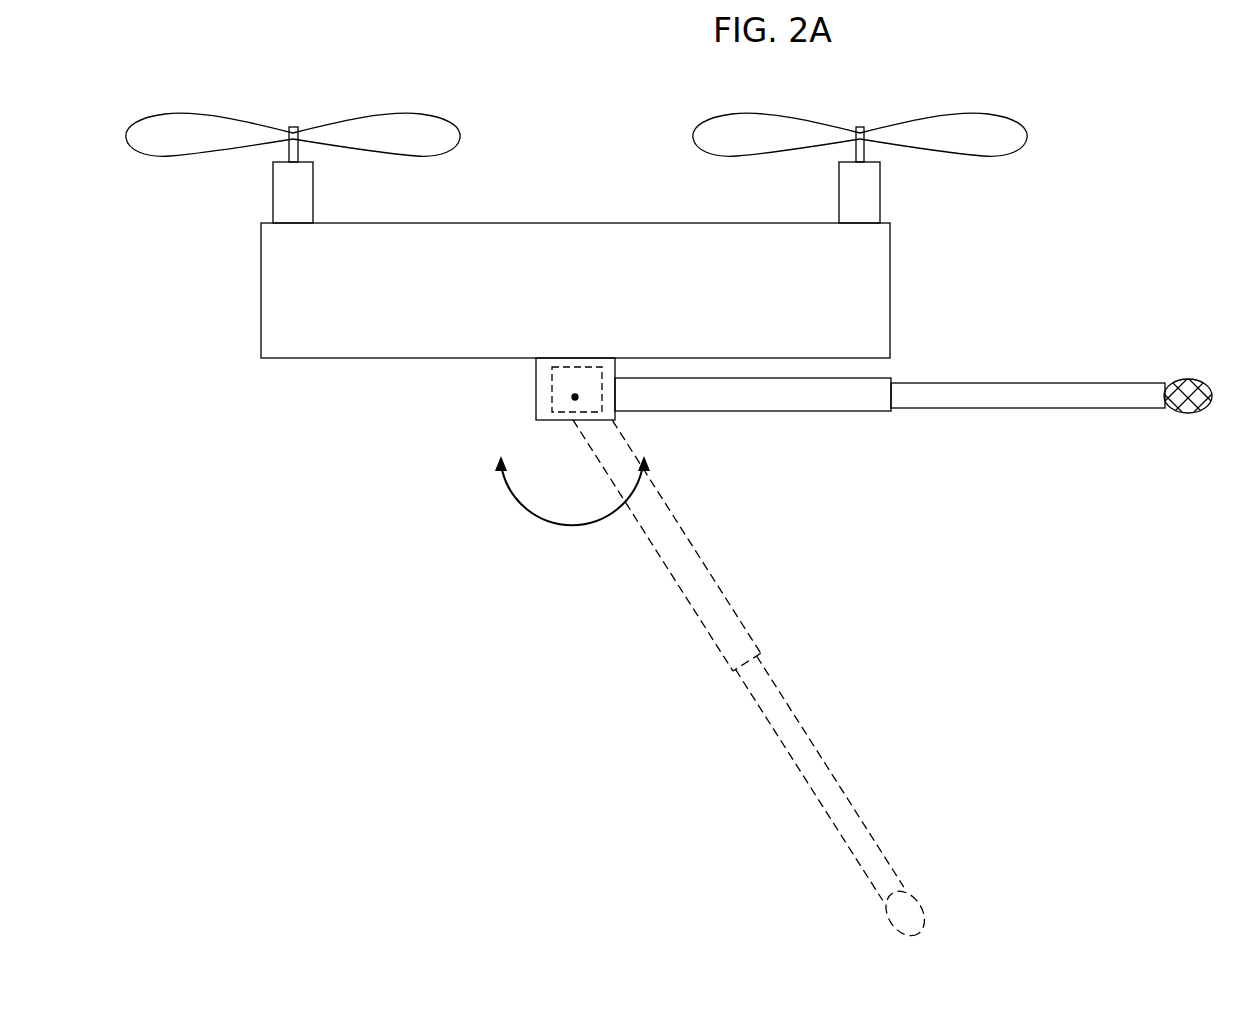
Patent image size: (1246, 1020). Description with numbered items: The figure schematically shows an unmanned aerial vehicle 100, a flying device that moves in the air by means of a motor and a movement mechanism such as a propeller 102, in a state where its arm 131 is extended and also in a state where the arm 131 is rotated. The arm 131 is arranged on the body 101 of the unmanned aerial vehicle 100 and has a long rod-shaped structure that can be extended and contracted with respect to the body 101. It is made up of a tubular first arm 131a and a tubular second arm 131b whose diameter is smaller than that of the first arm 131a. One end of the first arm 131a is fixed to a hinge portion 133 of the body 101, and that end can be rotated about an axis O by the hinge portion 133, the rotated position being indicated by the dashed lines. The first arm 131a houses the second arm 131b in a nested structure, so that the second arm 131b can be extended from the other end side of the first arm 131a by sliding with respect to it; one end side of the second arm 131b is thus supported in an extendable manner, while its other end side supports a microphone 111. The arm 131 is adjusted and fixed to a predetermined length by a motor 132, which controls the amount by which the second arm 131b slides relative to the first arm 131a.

The unmanned aerial vehicle 100 is at (1038, 105).
The body 101 is at (625, 220).
The propeller 102 is at (929, 120).
The microphone 111 is at (1188, 414).
The arm 131 is at (869, 640).
The first arm 131a is at (864, 411).
The second arm 131b is at (1028, 427).
The motor 132 is at (550, 441).
The hinge portion 133 is at (552, 421).
The axis O is at (572, 397).